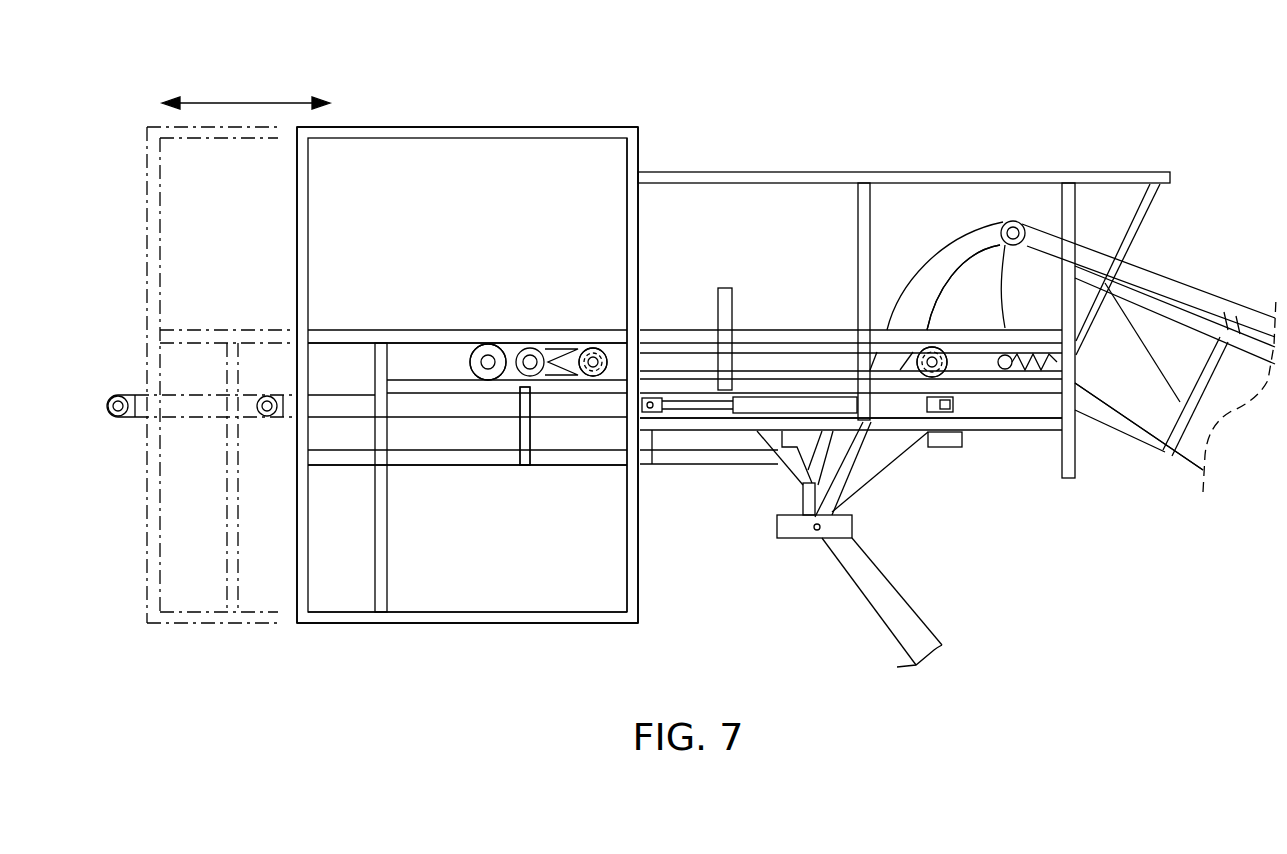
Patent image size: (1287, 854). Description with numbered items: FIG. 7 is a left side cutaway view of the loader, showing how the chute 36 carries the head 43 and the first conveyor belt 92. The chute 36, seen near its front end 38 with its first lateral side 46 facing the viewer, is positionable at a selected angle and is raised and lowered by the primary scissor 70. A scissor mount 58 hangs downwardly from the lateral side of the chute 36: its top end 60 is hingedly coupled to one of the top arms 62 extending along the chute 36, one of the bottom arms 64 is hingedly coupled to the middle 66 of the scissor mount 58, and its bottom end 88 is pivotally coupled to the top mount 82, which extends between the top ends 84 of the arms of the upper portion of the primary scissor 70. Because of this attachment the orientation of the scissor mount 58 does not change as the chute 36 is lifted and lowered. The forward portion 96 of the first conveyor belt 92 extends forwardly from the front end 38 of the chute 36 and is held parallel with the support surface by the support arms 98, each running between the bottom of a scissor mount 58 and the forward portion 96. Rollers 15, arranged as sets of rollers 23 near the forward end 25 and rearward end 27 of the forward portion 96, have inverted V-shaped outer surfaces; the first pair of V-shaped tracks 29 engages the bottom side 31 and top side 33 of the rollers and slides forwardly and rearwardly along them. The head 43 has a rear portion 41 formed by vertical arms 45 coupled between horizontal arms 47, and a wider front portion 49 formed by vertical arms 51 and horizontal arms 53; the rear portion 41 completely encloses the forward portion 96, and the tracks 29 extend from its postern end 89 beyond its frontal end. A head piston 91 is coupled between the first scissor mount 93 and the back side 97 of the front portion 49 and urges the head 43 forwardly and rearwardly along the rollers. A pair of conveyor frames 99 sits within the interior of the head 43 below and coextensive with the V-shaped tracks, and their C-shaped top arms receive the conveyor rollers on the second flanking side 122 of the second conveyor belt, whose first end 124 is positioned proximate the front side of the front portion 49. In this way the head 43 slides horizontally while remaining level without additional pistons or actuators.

The rollers 15 is at (597, 347).
The sets of rollers 23 is at (608, 333).
The forward end 25 is at (470, 357).
The rearward end 27 is at (955, 365).
The first pair of tracks 29 is at (672, 345).
The bottom side 31 is at (588, 347).
The top side 33 is at (593, 373).
The chute 36 is at (1241, 280).
The front end 38 is at (1092, 252).
The rear portion 41 is at (776, 172).
The head 43 is at (614, 100).
The vertical arms 45 is at (870, 388).
The first lateral side 46 is at (1175, 343).
The horizontal arms 47 is at (928, 175).
The front portion 49 is at (358, 127).
The vertical arms 51 is at (297, 203).
The horizontal arms 53 is at (427, 127).
The scissor mounts 58 is at (922, 250).
The top end 60 is at (993, 228).
The top arms 62 is at (1153, 290).
The bottom arms 64 is at (1132, 433).
The middle 66 is at (1033, 365).
The primary scissor 70 is at (933, 613).
The top mount 82 is at (778, 528).
The top end 84 is at (838, 545).
The bottom end 88 is at (853, 513).
The postern end 89 is at (1116, 412).
The head piston 91 is at (947, 398).
The first conveyor belt 92 is at (477, 332).
The first one of the pair of scissor mounts 93 is at (1003, 292).
The forward portion 96 is at (498, 353).
The back side 97 is at (638, 567).
The support arms 98 is at (787, 472).
The conveyor frames 99 is at (440, 457).
The second flanking side 122 is at (282, 396).
The first end 124 is at (263, 398).